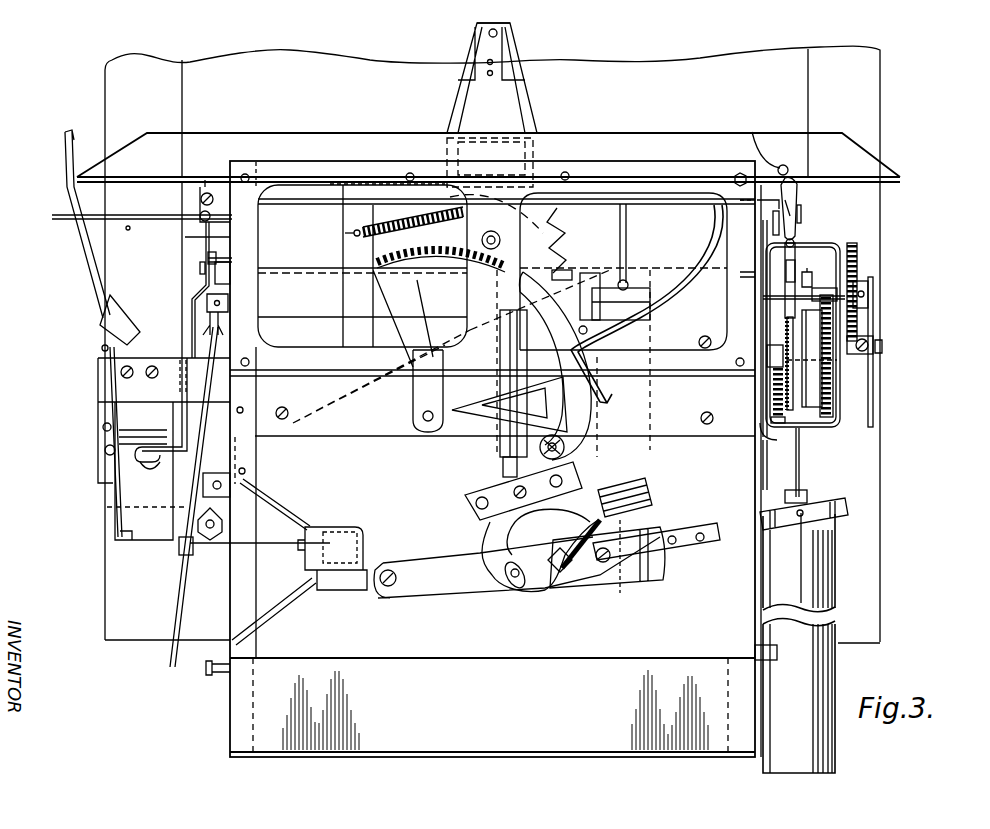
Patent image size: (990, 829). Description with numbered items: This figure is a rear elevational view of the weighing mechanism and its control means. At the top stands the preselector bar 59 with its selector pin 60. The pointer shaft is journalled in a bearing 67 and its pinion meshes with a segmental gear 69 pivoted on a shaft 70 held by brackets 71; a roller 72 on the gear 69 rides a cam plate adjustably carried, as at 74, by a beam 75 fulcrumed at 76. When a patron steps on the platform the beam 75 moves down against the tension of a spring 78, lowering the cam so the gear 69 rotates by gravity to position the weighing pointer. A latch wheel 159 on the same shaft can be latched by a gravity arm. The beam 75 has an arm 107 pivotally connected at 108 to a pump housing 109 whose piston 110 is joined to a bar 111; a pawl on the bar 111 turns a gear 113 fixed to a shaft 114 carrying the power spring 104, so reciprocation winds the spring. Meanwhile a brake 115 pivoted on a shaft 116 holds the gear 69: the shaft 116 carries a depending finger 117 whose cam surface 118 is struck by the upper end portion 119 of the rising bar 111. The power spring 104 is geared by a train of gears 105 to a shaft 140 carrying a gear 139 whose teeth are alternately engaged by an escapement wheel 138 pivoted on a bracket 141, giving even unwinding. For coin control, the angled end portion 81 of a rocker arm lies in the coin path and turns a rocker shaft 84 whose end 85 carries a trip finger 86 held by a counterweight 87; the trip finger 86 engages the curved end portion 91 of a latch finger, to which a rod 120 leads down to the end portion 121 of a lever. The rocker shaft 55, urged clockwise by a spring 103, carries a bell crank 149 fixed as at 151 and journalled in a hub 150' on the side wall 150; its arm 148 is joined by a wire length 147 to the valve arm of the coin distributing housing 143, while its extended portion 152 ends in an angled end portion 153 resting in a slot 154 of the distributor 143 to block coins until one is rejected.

The preselector bar 59 is at (524, 89).
The selector pin 60 is at (499, 35).
The rocker shaft 84 is at (305, 205).
The rocker shaft 55 is at (643, 268).
The latch wheel 159 is at (562, 236).
The brake 115 is at (612, 398).
The bearing 67 is at (508, 233).
The segmental gear 69 is at (470, 440).
The shaft 70 is at (428, 423).
The brackets 71 is at (412, 437).
The roller 72 is at (560, 456).
The adjustable mounting 74 is at (520, 592).
The beam 75 is at (478, 600).
The fulcrum 76 is at (378, 592).
The arm 107 is at (718, 548).
The spring 78 is at (640, 496).
The angled end portion 81 is at (60, 221).
The counterweight 87 is at (200, 195).
The side wall 150 is at (178, 232).
The bell crank 149 is at (206, 257).
The hub 150' is at (254, 252).
The fixing point 151 is at (200, 268).
The arm 148 is at (207, 312).
The wire length 147 is at (175, 362).
The distributing housing 143 is at (161, 500).
The extended portion 152 is at (182, 420).
The slot 154 is at (138, 455).
The angled end portion 153 is at (145, 464).
The shaft 116 is at (752, 132).
The end 85 is at (791, 182).
The trip finger 86 is at (792, 206).
The depending finger 117 is at (801, 212).
The curved end portion 91 is at (780, 226).
The cam surface 118 is at (795, 241).
The upper end portion 119 is at (862, 280).
The power spring 104 is at (842, 420).
The gear 113 is at (788, 440).
The shaft 114 is at (830, 352).
The spring 103 is at (775, 393).
The train of gears 105 is at (855, 285).
The gear 139 is at (838, 295).
The shaft 140 is at (887, 276).
The escapement wheel 138 is at (874, 305).
The bracket 141 is at (876, 346).
The bar 111 is at (800, 462).
The piston 110 is at (808, 495).
The rod 120 is at (763, 490).
The pivotal connection 108 is at (806, 516).
The pump housing 109 is at (812, 681).
The end portion 121 is at (755, 650).